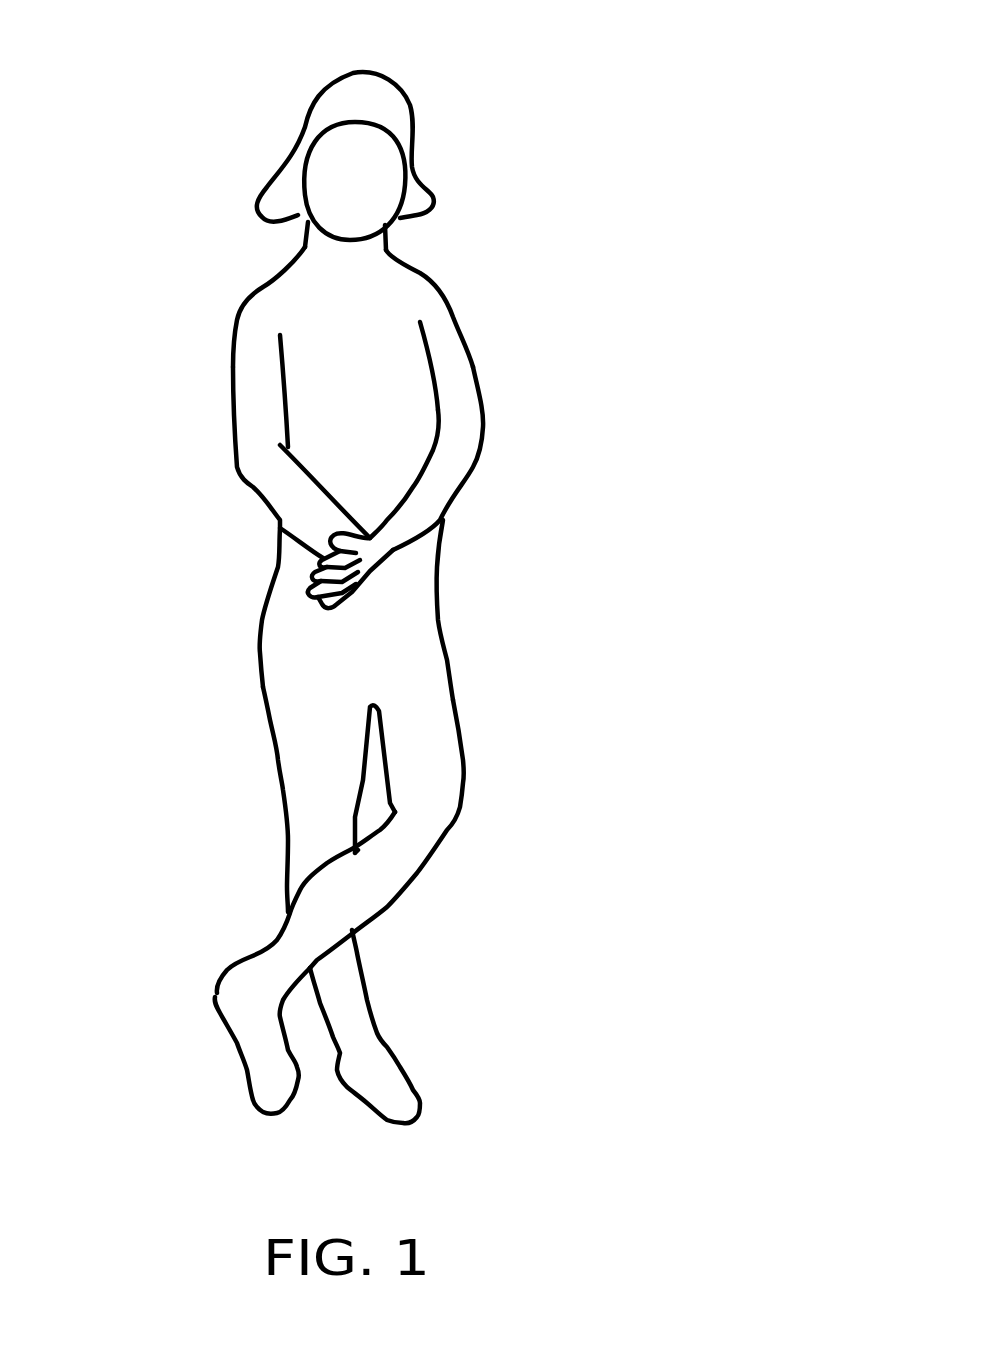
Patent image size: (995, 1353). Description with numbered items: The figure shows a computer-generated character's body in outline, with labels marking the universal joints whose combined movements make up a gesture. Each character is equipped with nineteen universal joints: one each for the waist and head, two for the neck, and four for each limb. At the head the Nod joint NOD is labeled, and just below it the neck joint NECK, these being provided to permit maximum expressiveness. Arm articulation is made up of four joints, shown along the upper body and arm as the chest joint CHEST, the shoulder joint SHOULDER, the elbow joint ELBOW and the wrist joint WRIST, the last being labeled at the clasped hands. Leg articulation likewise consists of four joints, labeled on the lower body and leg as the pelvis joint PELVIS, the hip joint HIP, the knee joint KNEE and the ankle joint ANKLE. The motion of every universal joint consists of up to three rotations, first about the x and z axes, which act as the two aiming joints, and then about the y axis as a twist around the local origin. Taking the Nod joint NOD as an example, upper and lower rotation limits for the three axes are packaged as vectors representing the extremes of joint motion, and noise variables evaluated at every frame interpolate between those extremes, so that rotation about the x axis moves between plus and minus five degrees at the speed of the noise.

The Nod joint NOD is at (347, 228).
The neck joint NECK is at (360, 252).
The chest joint CHEST is at (360, 309).
The shoulder joint SHOULDER is at (455, 349).
The elbow joint ELBOW is at (472, 448).
The wrist joint WRIST is at (392, 550).
The pelvis joint PELVIS is at (260, 618).
The hip joint HIP is at (447, 660).
The knee joint KNEE is at (450, 807).
The ankle joint ANKLE is at (320, 970).